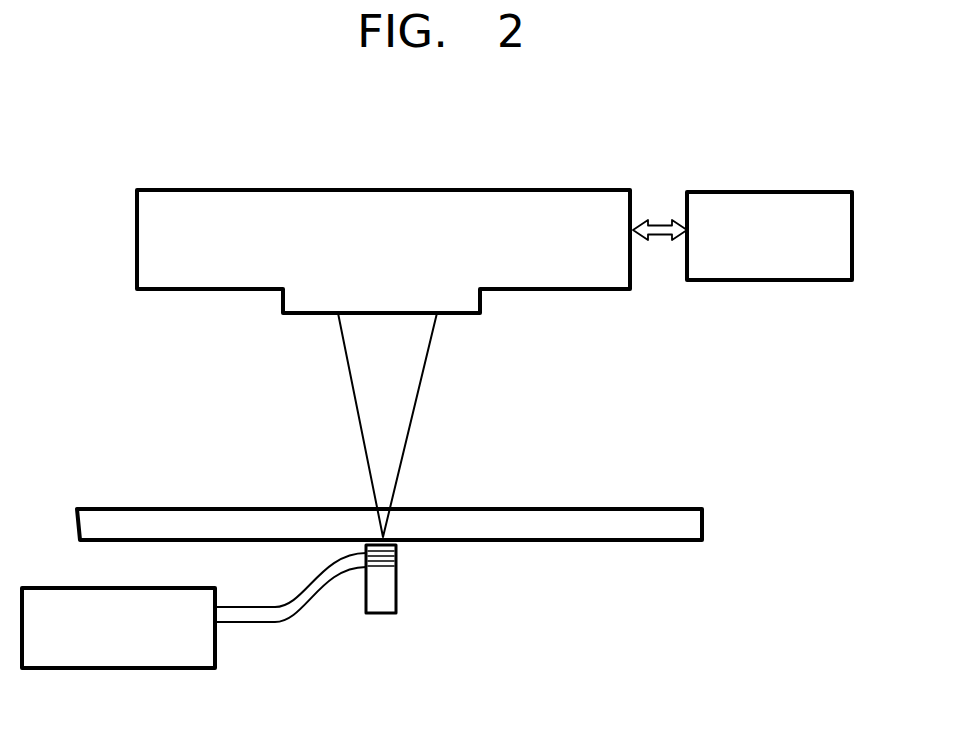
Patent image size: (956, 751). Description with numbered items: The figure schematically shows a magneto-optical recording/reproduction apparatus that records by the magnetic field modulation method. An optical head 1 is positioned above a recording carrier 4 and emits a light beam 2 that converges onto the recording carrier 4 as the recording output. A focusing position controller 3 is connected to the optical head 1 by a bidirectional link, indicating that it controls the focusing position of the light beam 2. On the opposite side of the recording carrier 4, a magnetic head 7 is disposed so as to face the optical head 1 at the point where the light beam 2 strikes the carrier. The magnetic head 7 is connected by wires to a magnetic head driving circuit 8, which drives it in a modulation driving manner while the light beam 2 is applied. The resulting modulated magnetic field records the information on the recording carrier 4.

The optical head 1 is at (597, 292).
The light beam 2 is at (403, 405).
The focusing position controller 3 is at (740, 191).
The recording carrier 4 is at (673, 530).
The magnetic head 7 is at (397, 562).
The magnetic head driving circuit 8 is at (157, 670).